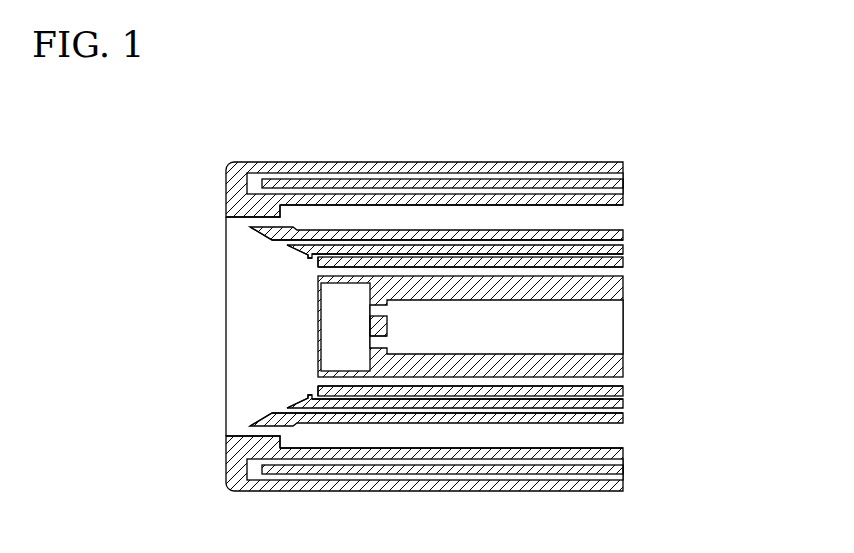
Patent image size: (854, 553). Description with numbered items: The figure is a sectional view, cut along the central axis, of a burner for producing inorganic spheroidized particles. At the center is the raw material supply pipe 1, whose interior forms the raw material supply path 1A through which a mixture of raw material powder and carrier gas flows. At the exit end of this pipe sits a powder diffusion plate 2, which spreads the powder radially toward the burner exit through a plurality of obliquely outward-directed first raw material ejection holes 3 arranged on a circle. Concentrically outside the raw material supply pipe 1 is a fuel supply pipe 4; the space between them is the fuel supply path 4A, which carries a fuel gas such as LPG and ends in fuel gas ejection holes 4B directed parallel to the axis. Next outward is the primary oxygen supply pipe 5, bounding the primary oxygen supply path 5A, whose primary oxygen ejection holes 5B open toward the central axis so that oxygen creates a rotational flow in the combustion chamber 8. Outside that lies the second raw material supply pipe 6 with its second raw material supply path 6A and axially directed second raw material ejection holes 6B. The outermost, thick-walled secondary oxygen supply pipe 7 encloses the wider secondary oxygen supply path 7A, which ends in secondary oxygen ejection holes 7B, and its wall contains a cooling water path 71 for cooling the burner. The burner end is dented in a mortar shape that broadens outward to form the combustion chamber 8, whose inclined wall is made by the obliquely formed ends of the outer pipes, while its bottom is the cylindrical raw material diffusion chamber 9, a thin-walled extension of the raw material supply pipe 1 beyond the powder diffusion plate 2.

The raw material supply pipe 1 is at (620, 285).
The raw material supply path 1A is at (595, 340).
The powder diffusion plate 2 is at (389, 323).
The first raw material ejection hole 3 is at (381, 340).
The fuel supply pipe 4 is at (614, 262).
The fuel supply path 4A is at (613, 272).
The fuel gas ejection hole 4B is at (320, 272).
The primary oxygen supply pipe 5 is at (624, 247).
The primary oxygen supply path 5A is at (612, 256).
The primary oxygen ejection hole 5B is at (315, 259).
The second raw material supply pipe 6 is at (537, 233).
The second raw material supply path 6A is at (492, 245).
The second raw material ejection hole 6B is at (282, 245).
The secondary oxygen supply pipe 7 is at (575, 202).
The secondary oxygen supply path 7A is at (607, 215).
The secondary oxygen ejection hole 7B is at (253, 221).
The cooling water path 71 is at (413, 180).
The combustion chamber 8 is at (243, 350).
The raw material diffusion chamber 9 is at (338, 345).